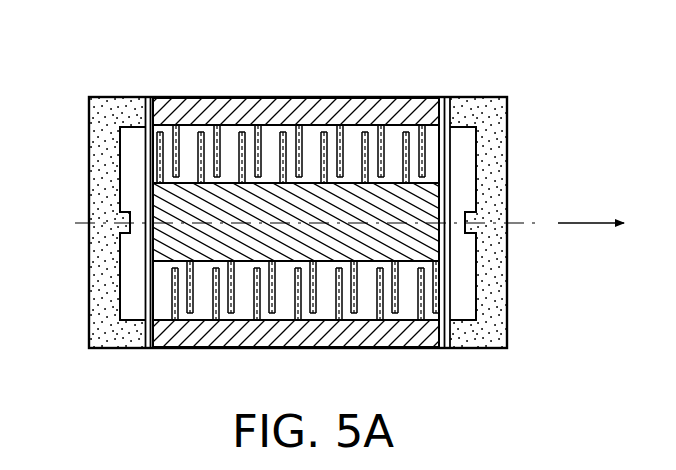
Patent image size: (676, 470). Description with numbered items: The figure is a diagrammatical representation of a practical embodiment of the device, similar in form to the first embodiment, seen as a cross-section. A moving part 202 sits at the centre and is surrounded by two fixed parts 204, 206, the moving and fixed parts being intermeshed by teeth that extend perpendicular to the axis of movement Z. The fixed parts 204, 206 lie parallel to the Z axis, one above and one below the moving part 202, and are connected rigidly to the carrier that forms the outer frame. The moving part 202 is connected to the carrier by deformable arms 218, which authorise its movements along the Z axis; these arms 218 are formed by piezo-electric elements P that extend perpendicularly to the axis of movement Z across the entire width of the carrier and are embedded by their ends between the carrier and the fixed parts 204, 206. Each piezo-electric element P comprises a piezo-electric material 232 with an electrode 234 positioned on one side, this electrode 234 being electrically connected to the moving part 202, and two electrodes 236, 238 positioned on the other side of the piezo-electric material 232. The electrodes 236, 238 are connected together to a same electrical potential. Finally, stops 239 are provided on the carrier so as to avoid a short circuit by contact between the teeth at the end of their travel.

The moving part 202 is at (353, 181).
The fixed part 204 is at (239, 97).
The fixed part 206 is at (203, 348).
The deformable arms 218 is at (136, 162).
The piezo-electric material 232 is at (447, 173).
The electrode 234 is at (450, 257).
The electrode 236 is at (450, 294).
The electrode 238 is at (453, 145).
The stops 239 is at (122, 207).
The piezo-electric elements P is at (147, 265).
The Z axis Z is at (591, 209).